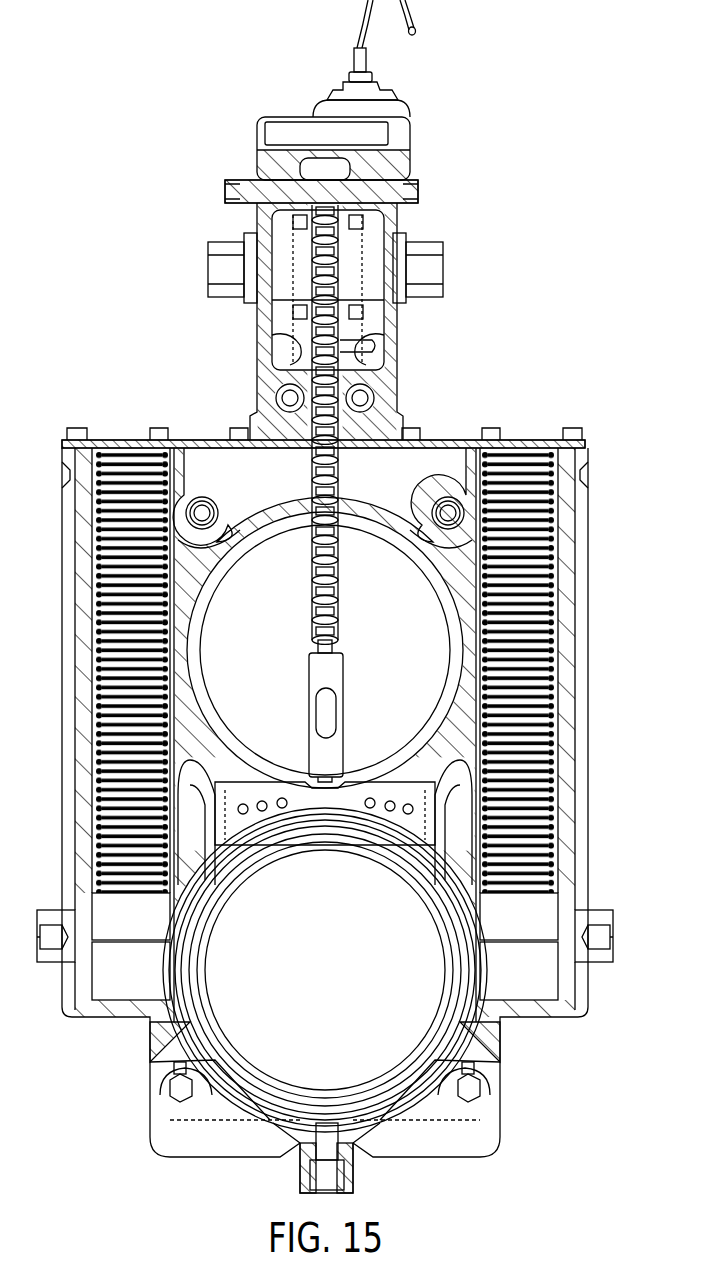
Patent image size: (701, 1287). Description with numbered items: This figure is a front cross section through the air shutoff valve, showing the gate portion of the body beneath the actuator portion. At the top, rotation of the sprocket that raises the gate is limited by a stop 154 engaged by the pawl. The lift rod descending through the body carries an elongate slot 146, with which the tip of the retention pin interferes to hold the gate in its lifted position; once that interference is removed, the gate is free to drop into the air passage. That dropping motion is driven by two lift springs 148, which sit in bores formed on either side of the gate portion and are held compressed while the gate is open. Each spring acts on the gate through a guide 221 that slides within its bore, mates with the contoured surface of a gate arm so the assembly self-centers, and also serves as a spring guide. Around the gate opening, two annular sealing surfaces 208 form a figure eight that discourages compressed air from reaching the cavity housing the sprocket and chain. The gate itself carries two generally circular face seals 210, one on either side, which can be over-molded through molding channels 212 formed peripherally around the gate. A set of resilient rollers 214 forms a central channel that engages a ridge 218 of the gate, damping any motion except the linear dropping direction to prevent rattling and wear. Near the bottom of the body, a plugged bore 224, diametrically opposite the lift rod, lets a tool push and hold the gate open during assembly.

The stop 154 is at (400, 190).
The resilient rollers 214 is at (203, 512).
The annular sealing surfaces 208 is at (465, 572).
The lift springs 148 is at (105, 650).
The elongate slot 146 is at (328, 712).
The ridge 218 is at (432, 818).
The guides 221 is at (110, 975).
The molding channels 212 is at (235, 1000).
The face seals 210 is at (450, 1030).
The bore 224 is at (320, 1147).